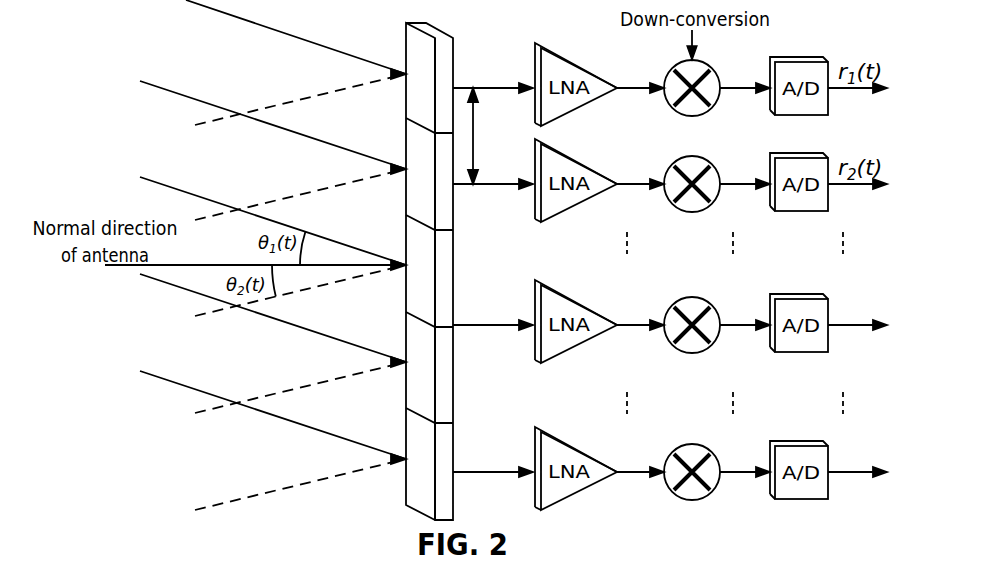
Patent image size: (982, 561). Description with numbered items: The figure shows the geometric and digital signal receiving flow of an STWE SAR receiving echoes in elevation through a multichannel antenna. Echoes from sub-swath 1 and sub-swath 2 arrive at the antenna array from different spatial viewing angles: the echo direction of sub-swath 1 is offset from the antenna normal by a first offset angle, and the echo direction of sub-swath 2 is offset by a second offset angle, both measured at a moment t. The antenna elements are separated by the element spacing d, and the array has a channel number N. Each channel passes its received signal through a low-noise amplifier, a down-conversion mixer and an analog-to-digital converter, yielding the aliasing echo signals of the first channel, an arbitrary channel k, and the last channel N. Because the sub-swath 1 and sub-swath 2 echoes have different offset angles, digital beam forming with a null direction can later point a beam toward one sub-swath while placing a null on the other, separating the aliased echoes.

The sub-swath 1 is at (266, 229).
The sub-swath 2 is at (291, 292).
The element spacing d is at (484, 136).
The k-th receive channel k is at (670, 321).
The channel number N is at (670, 468).